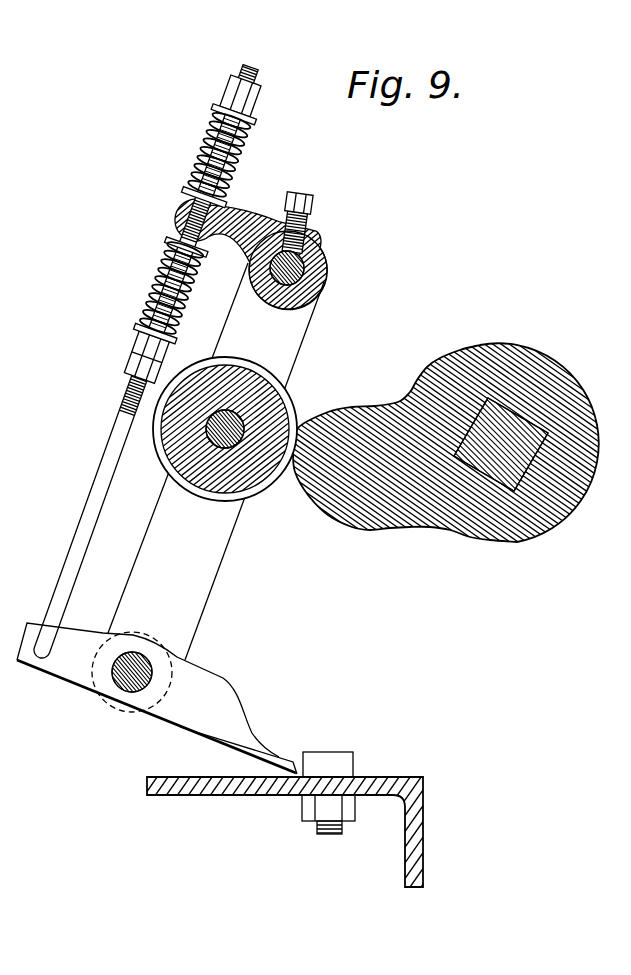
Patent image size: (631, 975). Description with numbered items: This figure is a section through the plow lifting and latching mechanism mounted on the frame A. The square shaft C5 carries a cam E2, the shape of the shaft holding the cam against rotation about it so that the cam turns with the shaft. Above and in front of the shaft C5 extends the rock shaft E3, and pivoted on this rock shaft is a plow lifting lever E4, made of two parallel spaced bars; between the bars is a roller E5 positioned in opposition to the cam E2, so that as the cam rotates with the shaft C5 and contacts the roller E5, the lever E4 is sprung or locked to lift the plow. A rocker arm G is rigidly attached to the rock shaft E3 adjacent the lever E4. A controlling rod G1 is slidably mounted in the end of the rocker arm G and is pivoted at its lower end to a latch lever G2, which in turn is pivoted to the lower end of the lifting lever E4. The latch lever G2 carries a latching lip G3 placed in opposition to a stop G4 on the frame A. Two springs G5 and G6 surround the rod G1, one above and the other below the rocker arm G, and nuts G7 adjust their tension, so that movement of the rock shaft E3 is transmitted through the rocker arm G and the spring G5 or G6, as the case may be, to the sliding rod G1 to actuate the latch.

The frame A is at (418, 786).
The rocker arm G is at (244, 222).
The controlling rod G1 is at (90, 514).
The latch lever G2 is at (73, 678).
The latching lip G3 is at (274, 752).
The stop G4 is at (337, 758).
The spring G5 is at (212, 146).
The spring G6 is at (160, 281).
The nut G7 is at (260, 100).
The cam E2 is at (350, 512).
The rock shaft E3 is at (322, 258).
The plow lifting lever E4 is at (303, 321).
The roller E5 is at (301, 400).
The square shaft C5 is at (500, 423).